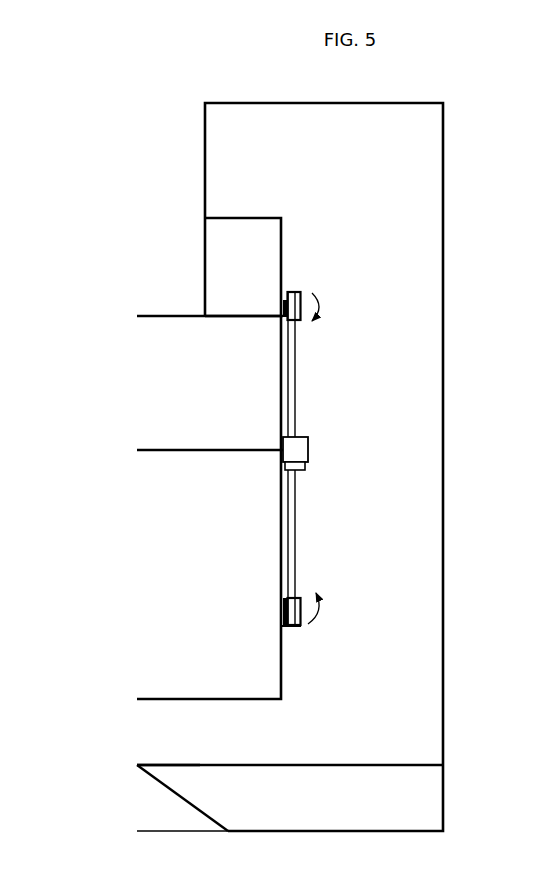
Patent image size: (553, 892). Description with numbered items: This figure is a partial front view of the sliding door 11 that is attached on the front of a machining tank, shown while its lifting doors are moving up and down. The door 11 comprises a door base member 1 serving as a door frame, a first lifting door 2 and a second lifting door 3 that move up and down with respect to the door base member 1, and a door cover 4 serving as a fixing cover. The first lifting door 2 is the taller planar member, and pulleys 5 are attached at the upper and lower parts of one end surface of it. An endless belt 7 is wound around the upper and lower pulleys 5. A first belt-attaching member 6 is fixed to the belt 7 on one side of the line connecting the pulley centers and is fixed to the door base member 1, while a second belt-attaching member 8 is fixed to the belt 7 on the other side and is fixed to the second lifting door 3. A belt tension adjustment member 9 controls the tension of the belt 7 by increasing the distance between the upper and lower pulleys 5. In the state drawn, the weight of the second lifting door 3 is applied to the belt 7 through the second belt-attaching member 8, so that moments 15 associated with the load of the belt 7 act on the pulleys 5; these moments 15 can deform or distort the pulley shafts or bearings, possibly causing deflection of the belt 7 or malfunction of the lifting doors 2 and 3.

The door base member 1 is at (445, 281).
The first lifting door 2 is at (236, 216).
The second lifting door 3 is at (239, 312).
The door cover 4 is at (192, 808).
The pulley 5 is at (308, 291).
The first belt-attaching member 6 is at (307, 469).
The endless belt 7 is at (301, 510).
The second belt-attaching member 8 is at (310, 441).
The belt tension adjustment member 9 is at (289, 639).
The door 11 is at (134, 790).
The moment 15 is at (328, 305).